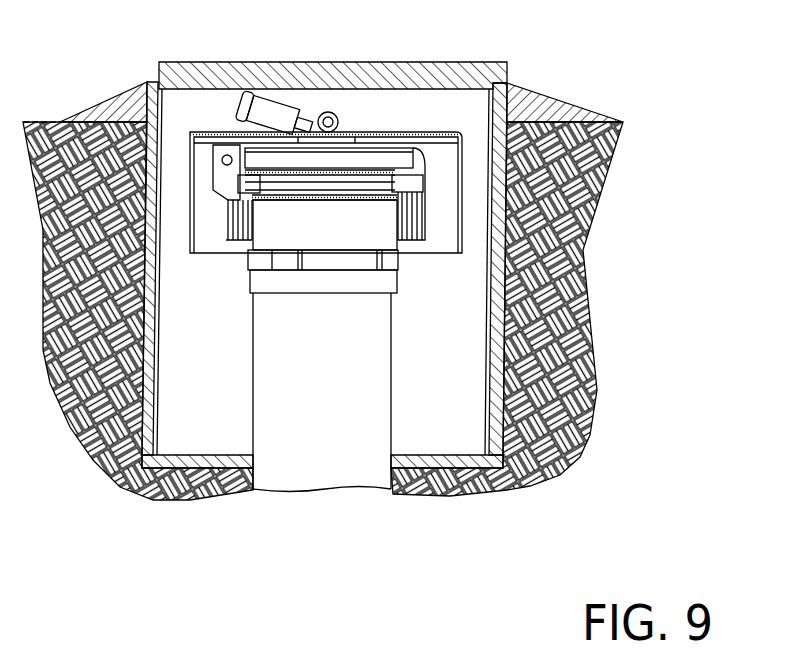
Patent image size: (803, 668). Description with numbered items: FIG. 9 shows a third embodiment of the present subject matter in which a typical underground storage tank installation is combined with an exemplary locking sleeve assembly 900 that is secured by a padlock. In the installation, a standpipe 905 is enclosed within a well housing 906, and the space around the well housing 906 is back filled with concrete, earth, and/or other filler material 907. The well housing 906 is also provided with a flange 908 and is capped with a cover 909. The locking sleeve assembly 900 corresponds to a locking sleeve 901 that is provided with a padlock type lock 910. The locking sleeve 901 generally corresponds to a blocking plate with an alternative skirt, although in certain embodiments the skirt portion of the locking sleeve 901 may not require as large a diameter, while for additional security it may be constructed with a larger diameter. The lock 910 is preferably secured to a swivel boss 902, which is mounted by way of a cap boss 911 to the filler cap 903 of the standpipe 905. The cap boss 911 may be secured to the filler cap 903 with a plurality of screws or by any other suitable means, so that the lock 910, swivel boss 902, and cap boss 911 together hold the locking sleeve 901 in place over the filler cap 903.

The locking sleeve assembly 900 is at (699, 195).
The locking sleeve 901 is at (202, 128).
The swivel boss 902 is at (338, 108).
The filler cap 903 is at (388, 158).
The standpipe 905 is at (363, 388).
The well housing 906 is at (517, 485).
The filler material 907 is at (537, 373).
The flange 908 is at (530, 102).
The cover 909 is at (493, 65).
The padlock type lock 910 is at (277, 95).
The cap boss 911 is at (365, 138).